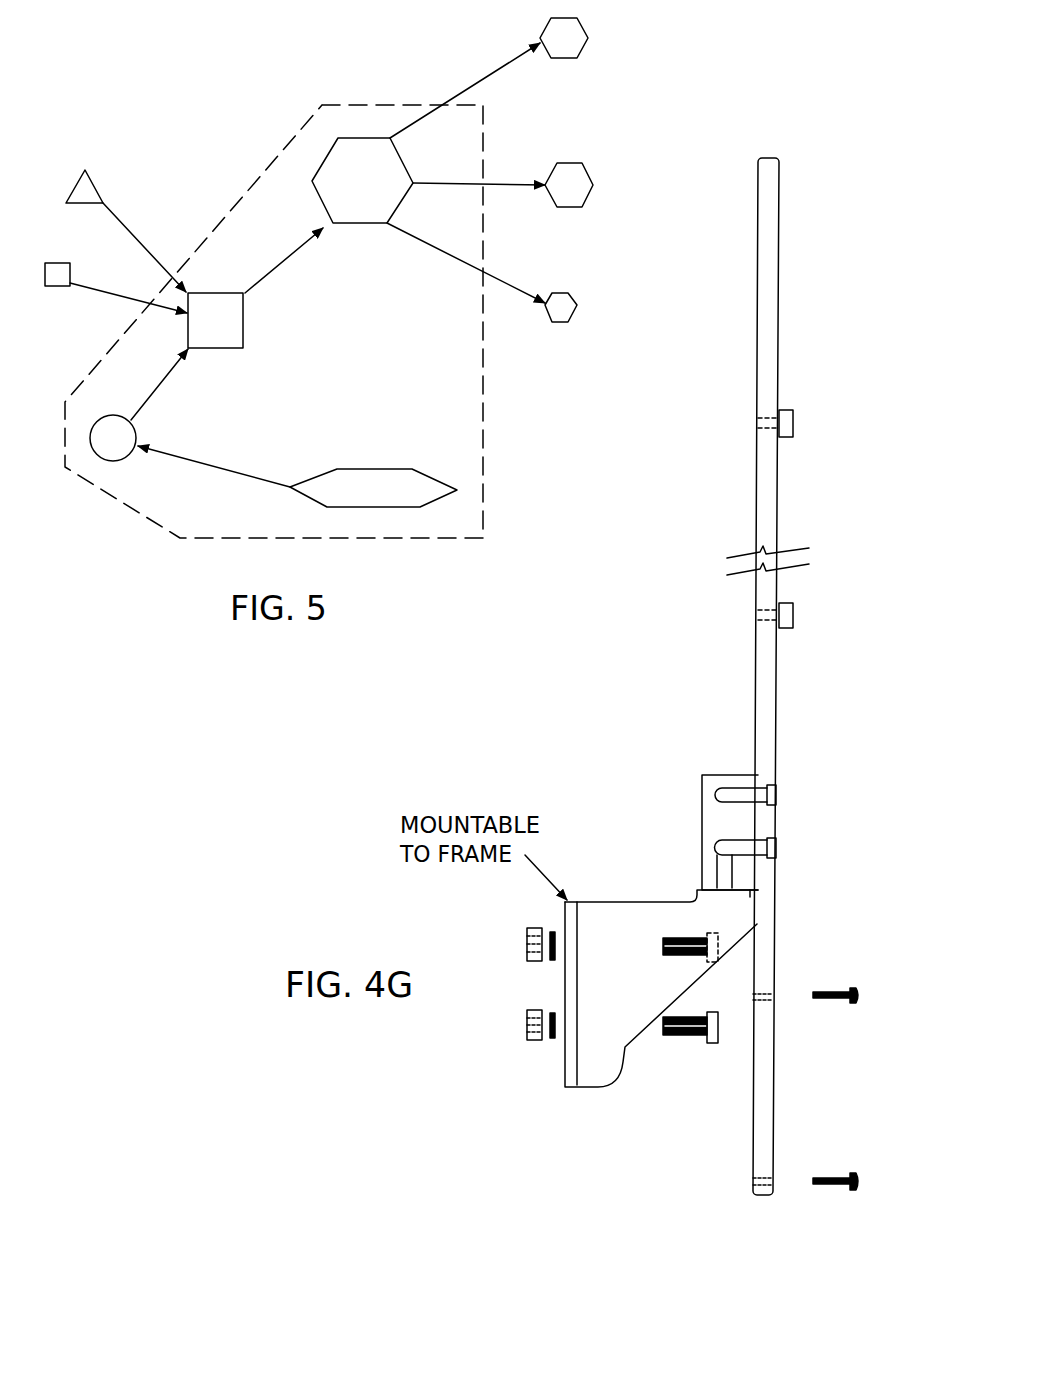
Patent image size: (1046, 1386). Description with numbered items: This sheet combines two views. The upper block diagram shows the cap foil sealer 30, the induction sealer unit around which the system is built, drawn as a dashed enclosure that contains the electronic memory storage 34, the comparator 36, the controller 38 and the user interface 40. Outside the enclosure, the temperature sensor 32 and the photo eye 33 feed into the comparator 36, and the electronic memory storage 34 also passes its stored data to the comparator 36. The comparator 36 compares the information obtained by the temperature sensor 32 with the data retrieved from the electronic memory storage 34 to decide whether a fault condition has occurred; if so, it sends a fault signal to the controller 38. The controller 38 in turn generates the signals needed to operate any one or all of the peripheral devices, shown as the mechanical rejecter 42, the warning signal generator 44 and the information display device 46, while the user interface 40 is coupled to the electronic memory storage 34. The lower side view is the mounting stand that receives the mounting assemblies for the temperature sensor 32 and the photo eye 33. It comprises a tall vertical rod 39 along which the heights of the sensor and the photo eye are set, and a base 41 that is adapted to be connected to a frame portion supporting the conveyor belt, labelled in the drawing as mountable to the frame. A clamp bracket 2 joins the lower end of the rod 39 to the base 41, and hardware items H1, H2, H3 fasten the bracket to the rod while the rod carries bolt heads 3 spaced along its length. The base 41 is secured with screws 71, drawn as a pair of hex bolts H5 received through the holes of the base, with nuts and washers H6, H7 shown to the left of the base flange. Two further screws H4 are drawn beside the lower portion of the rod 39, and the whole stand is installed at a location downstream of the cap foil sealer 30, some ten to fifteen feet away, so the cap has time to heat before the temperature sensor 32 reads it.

In FIG. 5, the cap foil sealer 30 is at (455, 405).
In FIG. 5, the temperature sensor 32 is at (95, 183).
In FIG. 5, the photo eye 33 is at (57, 287).
In FIG. 5, the electronic memory storage 34 is at (100, 465).
In FIG. 5, the comparator 36 is at (233, 327).
In FIG. 5, the controller 38 is at (353, 207).
In FIG. 5, the user interface 40 is at (377, 508).
In FIG. 5, the mechanical rejecter 42 is at (590, 173).
In FIG. 5, the warning signal generator 44 is at (576, 303).
In FIG. 5, the information display device 46 is at (585, 32).
In FIG. 4G, the clamp bracket 2 is at (703, 773).
In FIG. 4G, the rail bolt 3 is at (755, 683).
In FIG. 4G, the rod 39 is at (768, 687).
In FIG. 4G, the base 41 is at (627, 917).
In FIG. 4G, the screws 71 is at (660, 952).
In FIG. 4G, the bolt H1 is at (773, 792).
In FIG. 4G, the bolt H2 is at (796, 880).
In FIG. 4G, the slot H3 is at (724, 871).
In FIG. 4G, the screw H4 is at (827, 999).
In FIG. 4G, the hex bolt H5 is at (677, 1035).
In FIG. 4G, the nut H6 is at (538, 1047).
In FIG. 4G, the washer H7 is at (541, 1025).